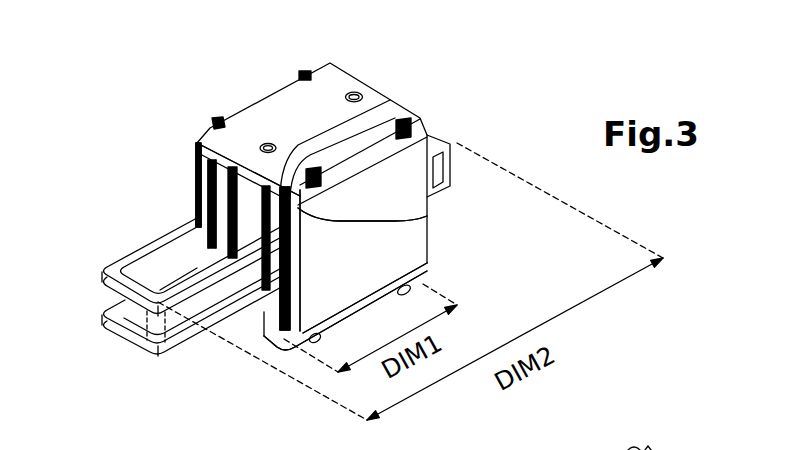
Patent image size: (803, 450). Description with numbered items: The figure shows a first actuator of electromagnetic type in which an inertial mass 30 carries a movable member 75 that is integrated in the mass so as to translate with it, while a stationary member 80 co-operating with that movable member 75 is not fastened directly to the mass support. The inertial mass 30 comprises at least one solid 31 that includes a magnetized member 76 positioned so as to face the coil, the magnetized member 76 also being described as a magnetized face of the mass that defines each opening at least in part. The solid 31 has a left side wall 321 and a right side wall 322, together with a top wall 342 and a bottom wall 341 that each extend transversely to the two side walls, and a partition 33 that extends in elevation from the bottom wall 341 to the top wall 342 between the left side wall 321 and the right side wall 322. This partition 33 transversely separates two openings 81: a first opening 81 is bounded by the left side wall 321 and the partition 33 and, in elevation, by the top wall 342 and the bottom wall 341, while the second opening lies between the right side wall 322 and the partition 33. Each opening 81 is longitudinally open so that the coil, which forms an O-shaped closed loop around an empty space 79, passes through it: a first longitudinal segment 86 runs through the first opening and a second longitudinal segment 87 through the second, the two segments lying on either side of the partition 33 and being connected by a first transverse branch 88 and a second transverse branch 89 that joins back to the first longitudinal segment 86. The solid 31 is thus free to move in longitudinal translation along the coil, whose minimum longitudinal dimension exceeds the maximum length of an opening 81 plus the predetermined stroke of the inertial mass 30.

The inertial mass 30 is at (352, 62).
The solid 31 is at (366, 85).
The partition 33 is at (250, 203).
The movable member 75 is at (197, 143).
The magnetized member 76 is at (143, 127).
The empty space 79 is at (160, 283).
The stationary member 80 is at (147, 329).
The opening 81 is at (388, 107).
The first longitudinal segment 86 is at (104, 275).
The second longitudinal segment 87 is at (172, 322).
The first transverse branch 88 is at (100, 322).
The second transverse branch 89 is at (432, 133).
The left side wall 321 is at (197, 168).
The right side wall 322 is at (312, 303).
The bottom wall 341 is at (290, 335).
The top wall 342 is at (292, 97).